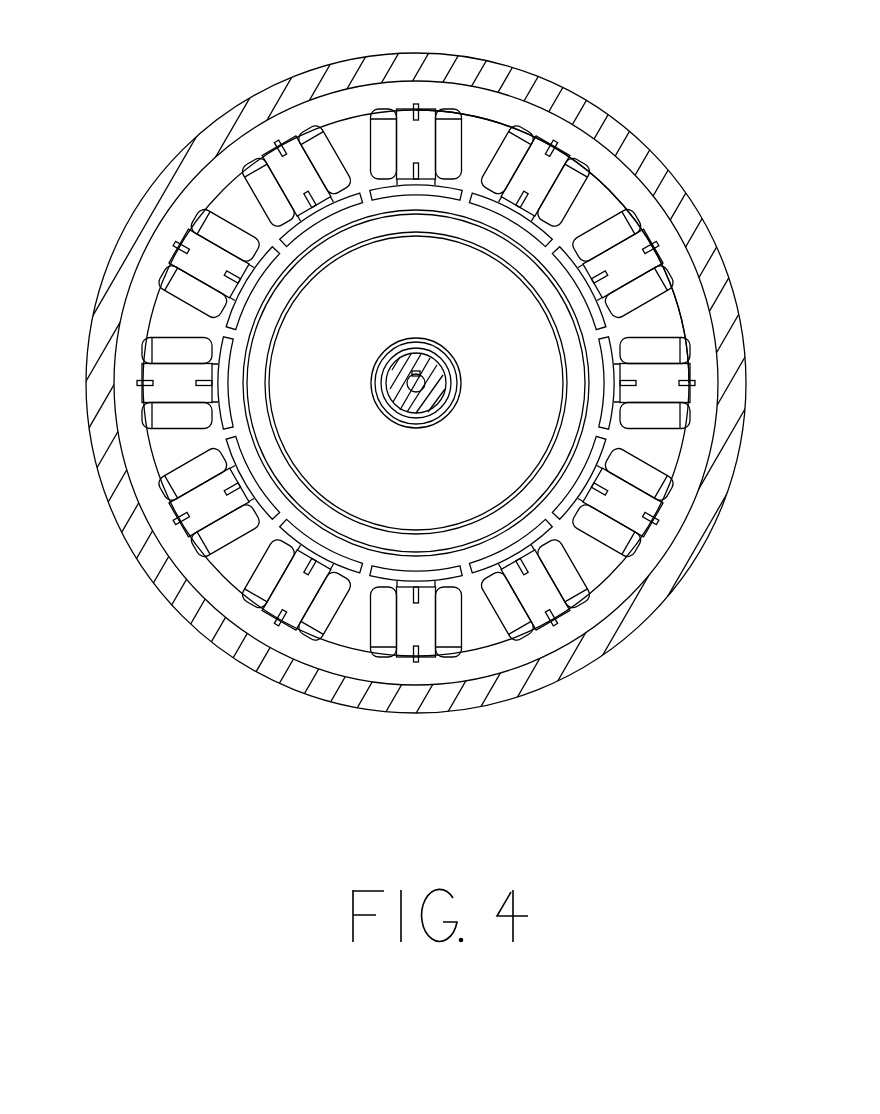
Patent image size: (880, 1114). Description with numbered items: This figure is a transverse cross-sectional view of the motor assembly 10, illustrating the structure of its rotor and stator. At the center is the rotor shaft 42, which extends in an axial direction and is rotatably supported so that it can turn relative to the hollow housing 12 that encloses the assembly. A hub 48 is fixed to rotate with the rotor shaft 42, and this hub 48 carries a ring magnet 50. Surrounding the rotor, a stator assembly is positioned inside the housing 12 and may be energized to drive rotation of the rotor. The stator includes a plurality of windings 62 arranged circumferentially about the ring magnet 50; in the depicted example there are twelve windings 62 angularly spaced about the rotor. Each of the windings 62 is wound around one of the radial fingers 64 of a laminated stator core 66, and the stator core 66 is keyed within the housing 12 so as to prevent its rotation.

The motor assembly 10 is at (218, 762).
The housing 12 is at (672, 178).
The rotor shaft 42 is at (437, 403).
The hub 48 is at (424, 299).
The ring magnet 50 is at (508, 104).
The windings 62 is at (384, 150).
The radial fingers 64 is at (425, 135).
The laminated stator core 66 is at (705, 370).